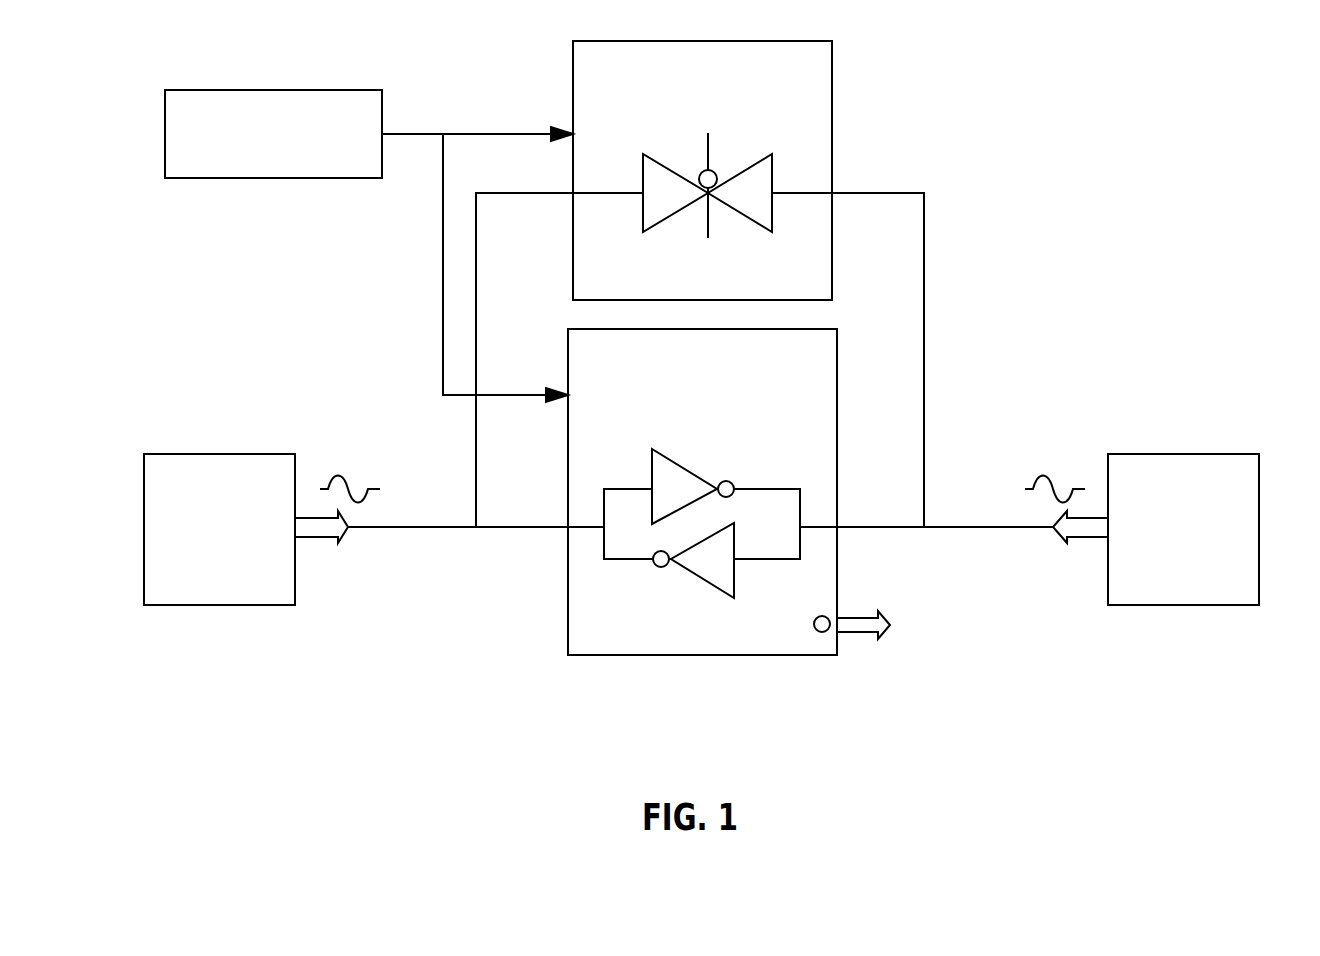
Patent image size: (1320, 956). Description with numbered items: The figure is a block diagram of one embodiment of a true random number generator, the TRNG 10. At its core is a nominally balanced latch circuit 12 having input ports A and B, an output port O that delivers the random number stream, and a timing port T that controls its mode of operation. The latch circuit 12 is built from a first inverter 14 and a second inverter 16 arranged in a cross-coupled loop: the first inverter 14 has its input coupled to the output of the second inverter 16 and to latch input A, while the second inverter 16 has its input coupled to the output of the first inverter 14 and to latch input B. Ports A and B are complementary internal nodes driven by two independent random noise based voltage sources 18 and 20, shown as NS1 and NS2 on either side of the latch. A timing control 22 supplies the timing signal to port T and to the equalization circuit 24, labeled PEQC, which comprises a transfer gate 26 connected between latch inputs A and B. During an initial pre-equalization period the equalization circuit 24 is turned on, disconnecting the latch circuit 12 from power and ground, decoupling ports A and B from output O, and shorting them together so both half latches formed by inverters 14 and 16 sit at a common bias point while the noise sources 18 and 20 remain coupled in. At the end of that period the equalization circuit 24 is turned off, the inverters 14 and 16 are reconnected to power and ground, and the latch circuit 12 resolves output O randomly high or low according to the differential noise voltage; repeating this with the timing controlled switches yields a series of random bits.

The TRNG 10 is at (1110, 87).
The balanced latch circuit 12 is at (712, 407).
The first inverter 14 is at (683, 467).
The second inverter 16 is at (700, 580).
The random noise based voltage source 18 is at (235, 560).
The random noise based voltage source 20 is at (1197, 560).
The timing control 22 is at (285, 168).
The equalization circuit 24 is at (724, 117).
The transfer gate 26 is at (689, 236).